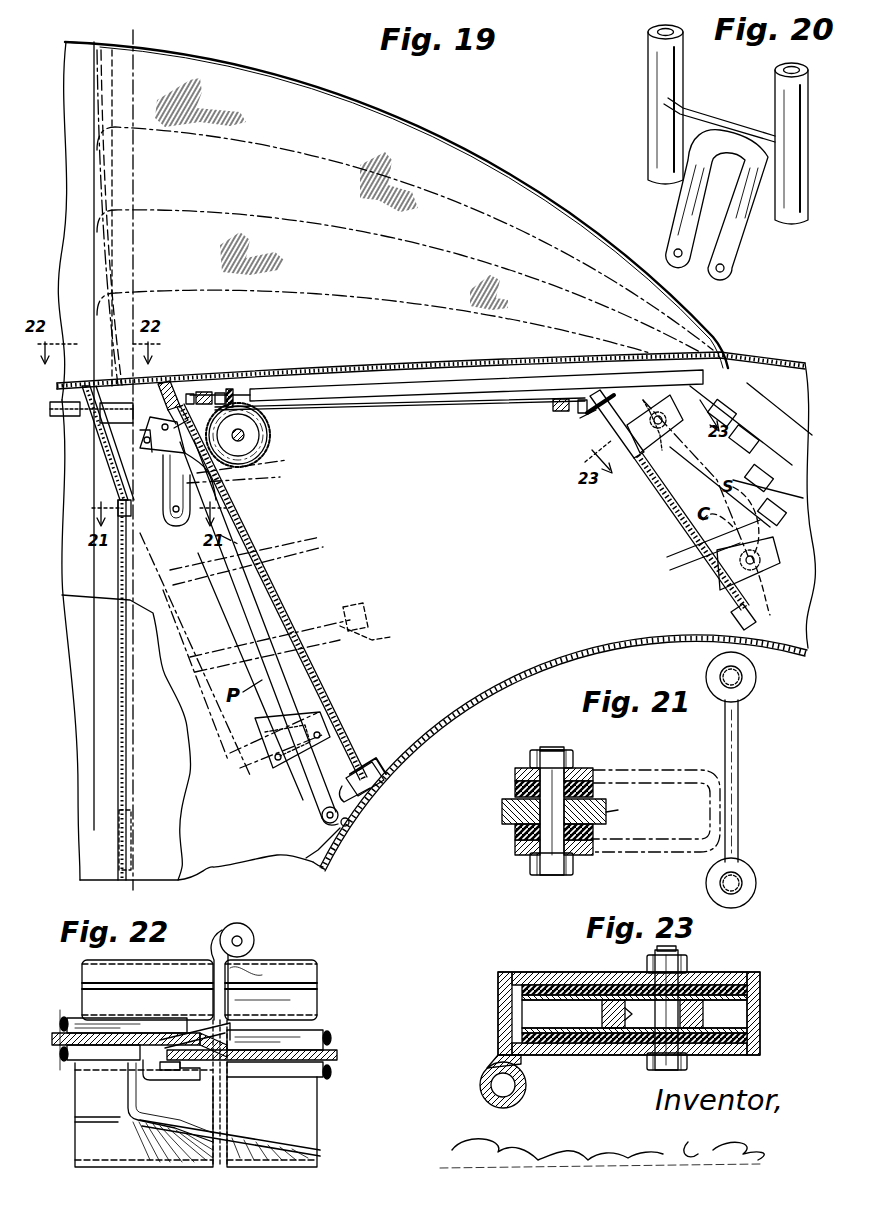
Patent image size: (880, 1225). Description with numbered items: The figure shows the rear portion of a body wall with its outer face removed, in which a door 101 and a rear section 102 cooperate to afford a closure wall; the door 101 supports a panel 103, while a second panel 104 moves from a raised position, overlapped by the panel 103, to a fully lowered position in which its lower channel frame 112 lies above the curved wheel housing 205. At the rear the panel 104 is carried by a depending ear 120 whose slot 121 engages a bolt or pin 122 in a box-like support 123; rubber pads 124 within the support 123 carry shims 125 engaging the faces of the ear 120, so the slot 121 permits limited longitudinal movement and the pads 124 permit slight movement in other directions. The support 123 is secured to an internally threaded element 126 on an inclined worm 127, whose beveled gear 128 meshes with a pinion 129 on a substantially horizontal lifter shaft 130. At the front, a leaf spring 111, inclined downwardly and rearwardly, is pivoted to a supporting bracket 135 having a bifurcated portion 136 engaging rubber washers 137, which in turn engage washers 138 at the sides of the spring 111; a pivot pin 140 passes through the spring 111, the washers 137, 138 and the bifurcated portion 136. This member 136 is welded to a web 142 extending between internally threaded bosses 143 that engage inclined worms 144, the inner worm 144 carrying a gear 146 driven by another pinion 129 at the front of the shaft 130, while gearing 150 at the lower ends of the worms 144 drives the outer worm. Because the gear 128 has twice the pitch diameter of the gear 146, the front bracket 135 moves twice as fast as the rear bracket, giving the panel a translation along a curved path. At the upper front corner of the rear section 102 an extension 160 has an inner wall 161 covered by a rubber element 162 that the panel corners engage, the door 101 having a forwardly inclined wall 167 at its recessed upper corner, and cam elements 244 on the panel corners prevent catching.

In FIG. 19, the door 101 is at (78, 745).
In FIG. 22, the door 101 is at (80, 1104).
In FIG. 19, the rear section 102 is at (278, 858).
In FIG. 22, the rear section 102 is at (290, 962).
In FIG. 19, the panel 103 is at (79, 436).
In FIG. 22, the panel 103 is at (66, 1032).
In FIG. 19, the panel 104 is at (340, 102).
In FIG. 22, the panel 104 is at (328, 1053).
In FIG. 19, the leaf spring 111 is at (314, 792).
In FIG. 21, the leaf spring 111 is at (502, 812).
In FIG. 19, the channel frame 112 is at (308, 402).
In FIG. 19, the depending ear 120 is at (752, 542).
In FIG. 23, the depending ear 120 is at (700, 1016).
In FIG. 19, the slot 121 is at (760, 602).
In FIG. 23, the slot 121 is at (620, 1014).
In FIG. 19, the bolt or pin 122 is at (660, 419).
In FIG. 23, the bolt or pin 122 is at (652, 951).
In FIG. 19, the box-like support 123 is at (658, 428).
In FIG. 23, the box-like support 123 is at (590, 1057).
In FIG. 23, the rubber pads 124 is at (760, 987).
In FIG. 23, the shims 125 is at (747, 998).
In FIG. 19, the internally threaded element 126 is at (622, 452).
In FIG. 23, the internally threaded element 126 is at (482, 1064).
In FIG. 19, the threaded rod or worm 127 is at (664, 500).
In FIG. 19, the beveled gear 128 is at (598, 414).
In FIG. 19, the pinion 129 is at (200, 385).
In FIG. 19, the lifter shaft 130 is at (474, 403).
In FIG. 19, the supporting bracket 135 is at (320, 814).
In FIG. 20, the supporting bracket 135 is at (645, 181).
In FIG. 20, the bifurcated portion 136 is at (740, 222).
In FIG. 21, the bifurcated portion 136 is at (590, 770).
In FIG. 21, the rubber washers 137 is at (594, 835).
In FIG. 21, the washers 138 is at (518, 828).
In FIG. 21, the pivot pin 140 is at (552, 748).
In FIG. 20, the web 142 is at (712, 110).
In FIG. 21, the web 142 is at (742, 748).
In FIG. 20, the internally threaded bosses 143 is at (648, 62).
In FIG. 21, the internally threaded bosses 143 is at (757, 678).
In FIG. 19, the worms 144 is at (316, 680).
In FIG. 19, the gear 146 is at (168, 392).
In FIG. 19, the gearing 150 is at (372, 770).
In FIG. 19, the extension 160 is at (108, 458).
In FIG. 22, the extension 160 is at (172, 1132).
In FIG. 22, the inner wall 161 is at (153, 1078).
In FIG. 22, the rubber element 162 is at (214, 1034).
In FIG. 19, the forwardly inclined wall 167 is at (112, 478).
In FIG. 19, the wheel housing 205 is at (506, 682).
In FIG. 19, the cam elements 244 is at (86, 418).